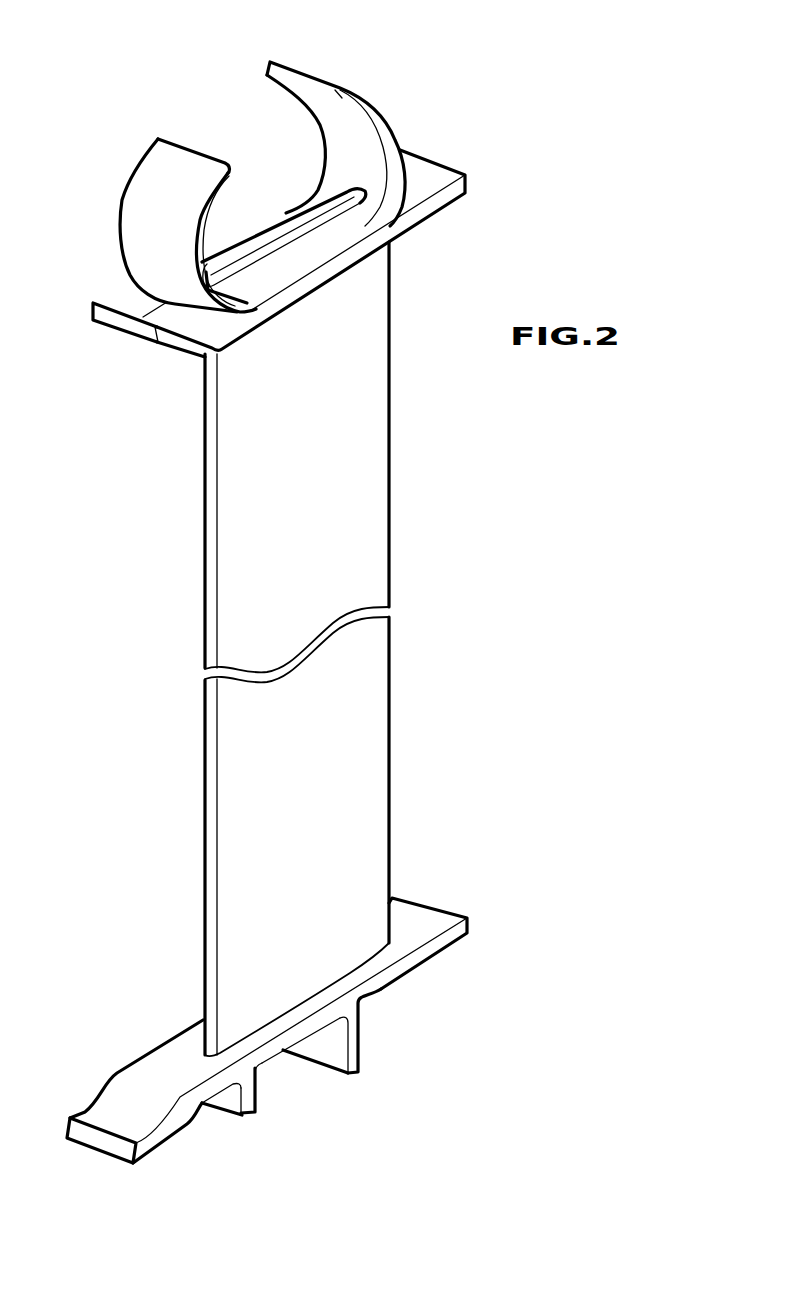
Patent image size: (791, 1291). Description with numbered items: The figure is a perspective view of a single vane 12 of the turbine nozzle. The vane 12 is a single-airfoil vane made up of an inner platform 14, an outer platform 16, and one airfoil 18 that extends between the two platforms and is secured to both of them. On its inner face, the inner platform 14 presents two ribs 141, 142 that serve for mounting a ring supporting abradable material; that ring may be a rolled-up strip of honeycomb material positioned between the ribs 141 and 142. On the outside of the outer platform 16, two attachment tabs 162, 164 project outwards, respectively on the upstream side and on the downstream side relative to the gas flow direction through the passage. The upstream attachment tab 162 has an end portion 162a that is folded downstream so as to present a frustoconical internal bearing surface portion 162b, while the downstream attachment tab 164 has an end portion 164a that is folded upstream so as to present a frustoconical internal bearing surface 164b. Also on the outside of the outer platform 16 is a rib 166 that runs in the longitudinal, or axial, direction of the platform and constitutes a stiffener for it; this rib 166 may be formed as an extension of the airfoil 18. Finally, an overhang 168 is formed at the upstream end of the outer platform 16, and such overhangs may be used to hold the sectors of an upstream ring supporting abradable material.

The vane 12 is at (178, 545).
The inner platform 14 is at (313, 997).
The outer platform 16 is at (295, 293).
The airfoil 18 is at (342, 477).
The rib 141 is at (242, 1120).
The rib 142 is at (355, 1052).
The upstream attachment tab 162 is at (144, 219).
The end portion 162a is at (155, 172).
The frustoconical internal bearing surface portion 162b is at (222, 197).
The downstream attachment tab 164 is at (389, 109).
The end portion 164a is at (360, 90).
The frustoconical internal bearing surface 164b is at (330, 115).
The rib 166 is at (283, 220).
The overhang 168 is at (113, 320).